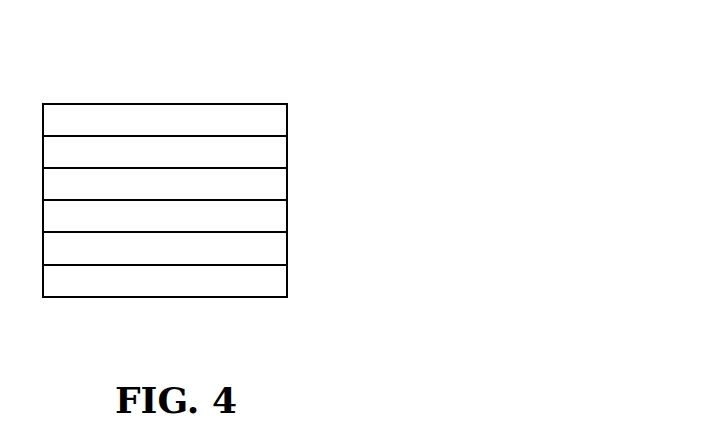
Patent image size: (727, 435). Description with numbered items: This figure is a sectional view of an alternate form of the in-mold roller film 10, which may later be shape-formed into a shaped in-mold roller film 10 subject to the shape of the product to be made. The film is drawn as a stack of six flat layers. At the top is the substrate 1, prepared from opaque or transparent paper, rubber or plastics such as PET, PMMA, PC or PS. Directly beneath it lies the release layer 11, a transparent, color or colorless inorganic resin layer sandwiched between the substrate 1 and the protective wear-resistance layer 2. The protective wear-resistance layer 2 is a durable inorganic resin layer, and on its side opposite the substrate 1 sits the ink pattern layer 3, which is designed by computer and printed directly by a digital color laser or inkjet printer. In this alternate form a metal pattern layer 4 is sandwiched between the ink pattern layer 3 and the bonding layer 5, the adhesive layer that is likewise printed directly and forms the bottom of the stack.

The in-mold roller film 10 is at (215, 104).
The substrate 1 is at (263, 122).
The release layer 11 is at (263, 152).
The protective wear-resistance layer 2 is at (267, 184).
The ink pattern layer 3 is at (272, 217).
The metal pattern layer 4 is at (270, 250).
The bonding layer 5 is at (267, 287).